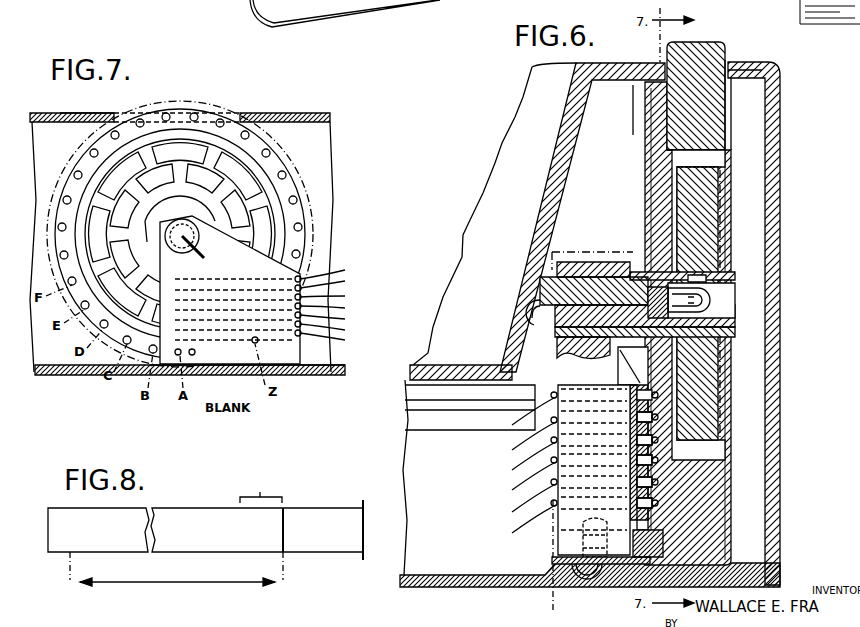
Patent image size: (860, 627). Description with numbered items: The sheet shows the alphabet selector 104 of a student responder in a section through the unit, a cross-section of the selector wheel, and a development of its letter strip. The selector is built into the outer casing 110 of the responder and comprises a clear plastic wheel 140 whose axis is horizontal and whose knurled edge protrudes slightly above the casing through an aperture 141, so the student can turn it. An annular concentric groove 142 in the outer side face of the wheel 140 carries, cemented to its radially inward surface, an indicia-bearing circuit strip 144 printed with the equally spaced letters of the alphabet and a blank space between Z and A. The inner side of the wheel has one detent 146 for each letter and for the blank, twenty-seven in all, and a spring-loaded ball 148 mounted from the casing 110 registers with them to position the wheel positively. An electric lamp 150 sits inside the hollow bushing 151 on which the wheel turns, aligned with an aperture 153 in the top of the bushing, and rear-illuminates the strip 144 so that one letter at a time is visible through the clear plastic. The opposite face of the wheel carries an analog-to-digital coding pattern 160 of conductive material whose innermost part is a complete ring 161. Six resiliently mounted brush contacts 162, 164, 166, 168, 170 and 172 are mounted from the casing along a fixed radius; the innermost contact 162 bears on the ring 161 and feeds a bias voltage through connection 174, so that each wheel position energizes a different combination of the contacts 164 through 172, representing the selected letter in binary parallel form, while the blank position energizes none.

In FIG. 6, the alphabet selector 104 is at (695, 46).
In FIG. 7, the alphabet selector 104 is at (162, 110).
In FIG. 6, the outer casing 110 is at (781, 112).
In FIG. 7, the outer casing 110 is at (290, 114).
In FIG. 6, the clear plastic wheel 140 is at (712, 60).
In FIG. 7, the clear plastic wheel 140 is at (189, 215).
In FIG. 6, the aperture 141 is at (740, 66).
In FIG. 7, the aperture 141 is at (118, 118).
In FIG. 6, the annular concentric groove 142 is at (712, 156).
In FIG. 6, the indicia-bearing circuit strip 144 is at (712, 166).
In FIG. 8, the indicia-bearing circuit strip 144 is at (182, 509).
In FIG. 6, the detent 146 is at (645, 88).
In FIG. 7, the detent 146 is at (279, 165).
In FIG. 6, the spring-loaded ball 148 is at (660, 552).
In FIG. 7, the spring-loaded ball 148 is at (206, 373).
In FIG. 6, the electric lamp 150 is at (700, 300).
In FIG. 6, the hollow bushing 151 is at (570, 262).
In FIG. 6, the aperture 153 is at (700, 272).
In FIG. 6, the analog-to-digital coding pattern 160 is at (648, 206).
In FIG. 7, the analog-to-digital coding pattern 160 is at (183, 147).
In FIG. 6, the ring of conductive material 161 is at (633, 438).
In FIG. 7, the ring of conductive material 161 is at (180, 227).
In FIG. 6, the innermost brush contact 162 is at (628, 385).
In FIG. 7, the innermost brush contact 162 is at (230, 290).
In FIG. 6, the brush contact 164 is at (636, 412).
In FIG. 6, the brush contact 166 is at (636, 433).
In FIG. 6, the brush contact 168 is at (636, 454).
In FIG. 6, the brush contact 170 is at (636, 474).
In FIG. 6, the brush contact 172 is at (636, 496).
In FIG. 7, the brush contact 172 is at (168, 366).
In FIG. 6, the connection 174 is at (556, 392).
In FIG. 7, the connection 174 is at (250, 275).